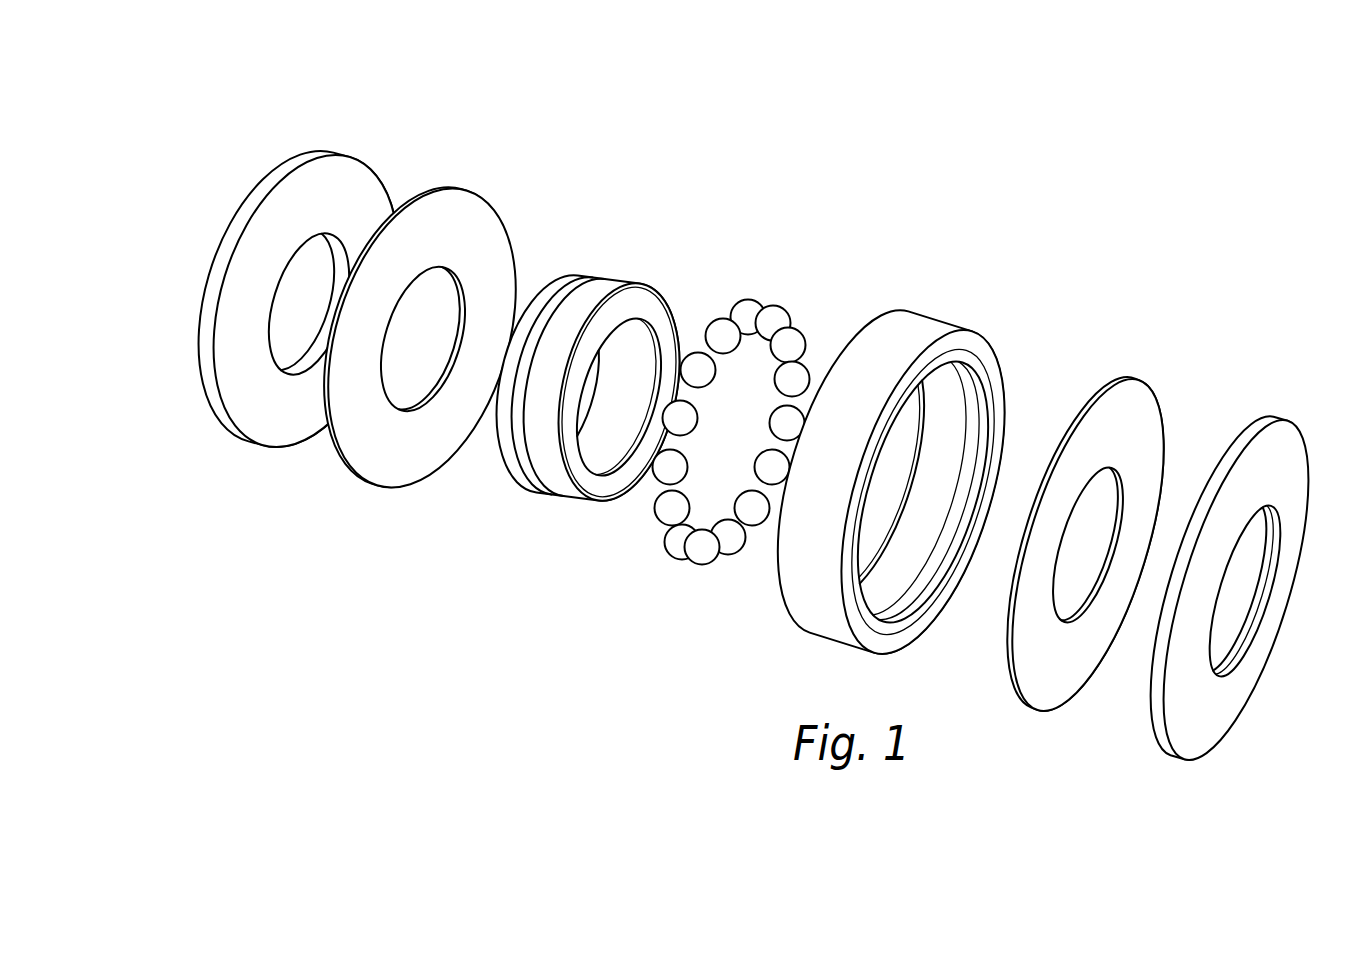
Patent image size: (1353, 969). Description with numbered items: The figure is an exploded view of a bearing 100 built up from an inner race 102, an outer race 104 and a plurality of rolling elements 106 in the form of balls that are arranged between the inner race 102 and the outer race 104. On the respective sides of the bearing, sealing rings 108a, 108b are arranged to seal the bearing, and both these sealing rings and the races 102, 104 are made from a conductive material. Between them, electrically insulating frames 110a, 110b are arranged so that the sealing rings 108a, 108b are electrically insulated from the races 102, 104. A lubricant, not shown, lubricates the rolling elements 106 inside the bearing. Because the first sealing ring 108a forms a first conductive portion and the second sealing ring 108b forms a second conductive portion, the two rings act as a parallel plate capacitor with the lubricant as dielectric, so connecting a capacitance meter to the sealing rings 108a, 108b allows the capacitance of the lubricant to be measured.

The bearing 100 is at (1111, 146).
The inner race 102 is at (602, 289).
The outer race 104 is at (928, 325).
The rolling elements 106 is at (787, 303).
The first sealing ring 108a is at (337, 163).
The second sealing ring 108b is at (1266, 423).
The electrically insulating frame 110a is at (478, 206).
The electrically insulating frame 110b is at (1132, 393).